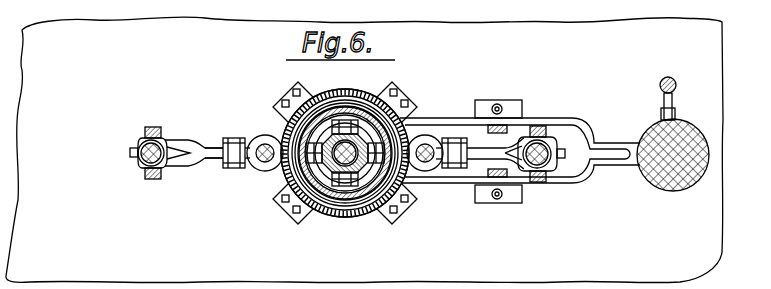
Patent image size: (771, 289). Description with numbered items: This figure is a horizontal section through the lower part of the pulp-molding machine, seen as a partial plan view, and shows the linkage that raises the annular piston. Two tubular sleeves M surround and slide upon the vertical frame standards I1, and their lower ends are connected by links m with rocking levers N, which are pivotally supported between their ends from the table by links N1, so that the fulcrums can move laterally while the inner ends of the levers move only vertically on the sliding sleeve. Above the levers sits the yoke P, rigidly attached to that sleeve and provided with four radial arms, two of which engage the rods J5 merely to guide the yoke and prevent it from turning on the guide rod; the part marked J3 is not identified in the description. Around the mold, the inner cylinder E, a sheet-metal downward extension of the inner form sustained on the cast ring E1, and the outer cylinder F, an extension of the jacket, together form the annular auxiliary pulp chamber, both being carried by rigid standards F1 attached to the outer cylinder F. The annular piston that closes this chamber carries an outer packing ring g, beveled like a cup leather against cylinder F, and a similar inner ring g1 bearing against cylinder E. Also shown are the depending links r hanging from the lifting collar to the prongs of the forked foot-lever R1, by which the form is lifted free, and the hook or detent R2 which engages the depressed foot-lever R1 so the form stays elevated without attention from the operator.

The tubular rods or sleeves M is at (146, 136).
The links m is at (166, 117).
The rocking levers N is at (201, 124).
The links N1 is at (232, 168).
The rods J5 is at (264, 145).
The pivot pin J3 is at (428, 162).
The yoke P is at (262, 172).
The frame standards I1 is at (140, 163).
The outer cylinder F is at (286, 97).
The standards F1 is at (345, 93).
The depending links r is at (304, 84).
The forked foot-lever R1 is at (325, 211).
The hook or detent R2 is at (670, 102).
The outer packing ring g is at (347, 217).
The inner packing ring g1 is at (359, 218).
The inner cylinder E is at (410, 205).
The annular ring E1 is at (397, 212).